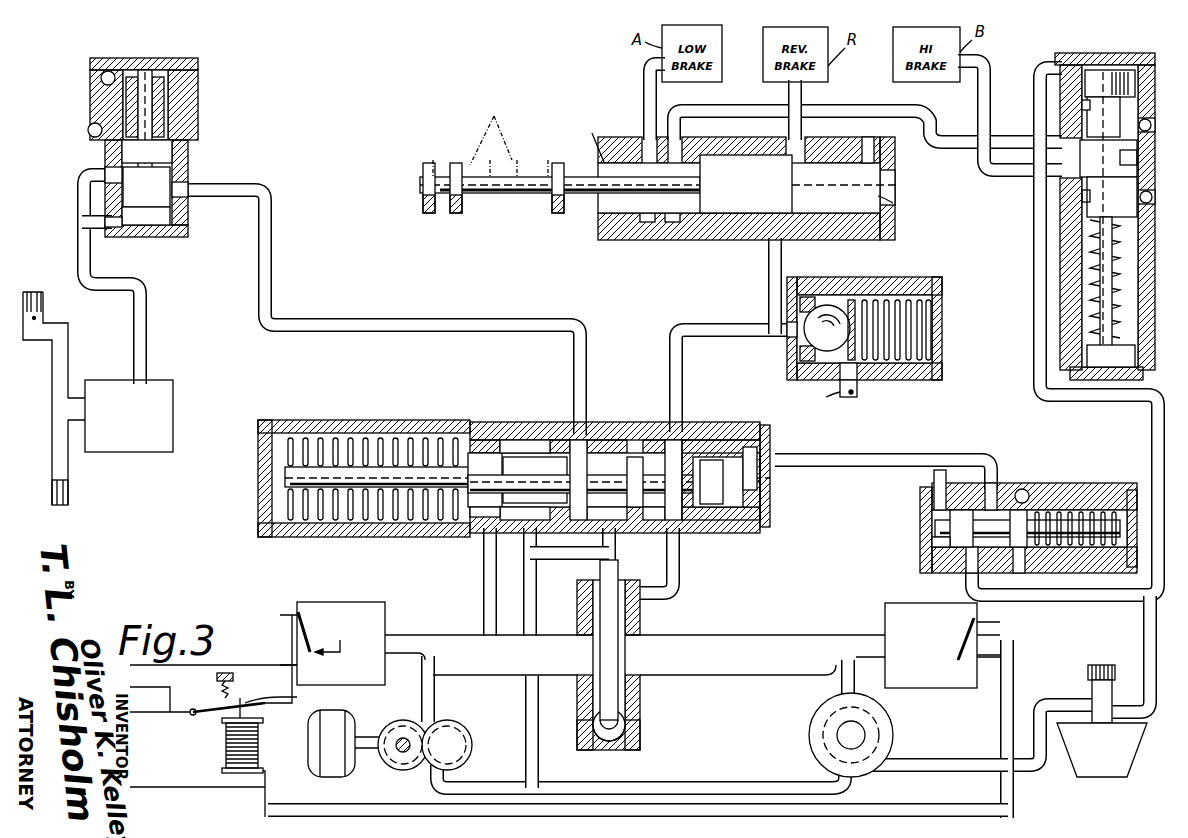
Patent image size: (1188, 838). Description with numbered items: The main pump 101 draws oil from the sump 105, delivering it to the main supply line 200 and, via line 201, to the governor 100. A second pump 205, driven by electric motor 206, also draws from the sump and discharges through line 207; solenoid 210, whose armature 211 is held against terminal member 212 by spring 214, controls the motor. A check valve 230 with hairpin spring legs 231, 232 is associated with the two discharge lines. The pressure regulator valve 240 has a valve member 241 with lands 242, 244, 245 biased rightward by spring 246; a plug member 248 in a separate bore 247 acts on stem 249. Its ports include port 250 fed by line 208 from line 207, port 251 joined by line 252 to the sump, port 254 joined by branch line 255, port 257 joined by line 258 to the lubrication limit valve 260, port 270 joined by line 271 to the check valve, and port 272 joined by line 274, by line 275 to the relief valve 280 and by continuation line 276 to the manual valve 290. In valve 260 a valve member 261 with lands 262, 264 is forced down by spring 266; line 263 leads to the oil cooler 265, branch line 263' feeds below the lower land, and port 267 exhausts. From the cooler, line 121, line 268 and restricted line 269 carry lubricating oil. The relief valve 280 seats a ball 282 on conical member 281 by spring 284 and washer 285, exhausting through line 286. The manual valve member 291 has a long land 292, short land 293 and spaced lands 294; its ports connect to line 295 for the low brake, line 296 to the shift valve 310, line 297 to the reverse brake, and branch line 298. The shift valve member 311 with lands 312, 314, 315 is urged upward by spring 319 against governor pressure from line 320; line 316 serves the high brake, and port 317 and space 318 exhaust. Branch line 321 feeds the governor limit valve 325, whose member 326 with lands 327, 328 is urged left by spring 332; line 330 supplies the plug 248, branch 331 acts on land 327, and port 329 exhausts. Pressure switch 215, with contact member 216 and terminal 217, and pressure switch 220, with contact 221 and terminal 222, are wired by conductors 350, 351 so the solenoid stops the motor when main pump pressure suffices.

The governor 100 is at (1122, 778).
The main pump 101 is at (872, 735).
The sump 105 is at (732, 792).
The line 121 is at (28, 292).
The main supply line 200 is at (842, 675).
The line 201 is at (932, 762).
The second pump 205 is at (462, 735).
The electric motor 206 is at (352, 722).
The line 207 is at (433, 672).
The line 208 is at (486, 562).
The solenoid 210 is at (226, 735).
The armature 211 is at (215, 708).
The terminal member 212 is at (283, 697).
The spring 214 is at (232, 678).
The pressure switch 215 is at (315, 619).
The contact member 216 is at (290, 616).
The terminal 217 is at (340, 652).
The pressure switch 220 is at (912, 644).
The contact 221 is at (962, 640).
The terminal 222 is at (970, 657).
The check valve 230 is at (645, 655).
The leg 231 is at (518, 655).
The leg 232 is at (620, 690).
The pressure regulator valve 240 is at (531, 470).
The valve member 241 is at (556, 465).
The land 242 is at (480, 458).
The land 244 is at (520, 490).
The land 245 is at (668, 440).
The spring 246 is at (372, 445).
The separate bore 247 is at (716, 460).
The plug member 248 is at (768, 452).
The stem 249 is at (720, 505).
The port 250 is at (478, 522).
The port 251 is at (526, 446).
The line 252 is at (528, 740).
The port 254 is at (636, 492).
The branch line 255 is at (536, 580).
The port 257 is at (583, 428).
The line 258 is at (503, 325).
The lubrication limit valve 260 is at (153, 150).
The valve member 261 is at (165, 195).
The land 262 is at (178, 158).
The line 263 is at (84, 279).
The branch line 263' is at (67, 233).
The land 264 is at (140, 222).
The oil cooler 265 is at (112, 386).
The spring 266 is at (150, 72).
The port 267 is at (115, 145).
The line 268 is at (40, 292).
The restricted line 269 is at (68, 492).
The port 270 is at (615, 532).
The line 271 is at (542, 553).
The port 272 is at (675, 538).
The line 274 is at (674, 590).
The line 275 is at (684, 404).
The continuation line 276 is at (768, 252).
The relief valve 280 is at (868, 331).
The conical shaped member 281 is at (820, 290).
The ball 282 is at (818, 330).
The spring 284 is at (924, 292).
The washer 285 is at (855, 300).
The line 286 is at (855, 392).
The manual valve 290 is at (672, 198).
The valve member 291 is at (590, 196).
The relatively long land 292 is at (790, 182).
The short land 293 is at (555, 206).
The spaced lands 294 is at (456, 205).
The line 295 is at (645, 118).
The line 296 is at (838, 108).
The line 297 is at (790, 128).
The branch line 298 is at (880, 148).
The shift valve 310 is at (1086, 205).
The valve member 311 is at (1100, 175).
The land 312 is at (1100, 195).
The land 314 is at (1088, 125).
The land 315 is at (1085, 72).
The line 316 is at (985, 168).
The port 317 is at (1090, 222).
The space 318 is at (1082, 106).
The spring 319 is at (1090, 320).
The line 320 is at (1038, 70).
The branch line 321 is at (1088, 592).
The governor limit valve 325 is at (1009, 532).
The valve member 326 is at (983, 500).
The land 327 is at (948, 540).
The land 328 is at (1019, 574).
The port 329 is at (1012, 495).
The line 330 is at (978, 452).
The branch line 331 is at (936, 470).
The spring 332 is at (1105, 520).
The electrical conductor 350 is at (998, 815).
The electrical conductor 351 is at (1013, 697).